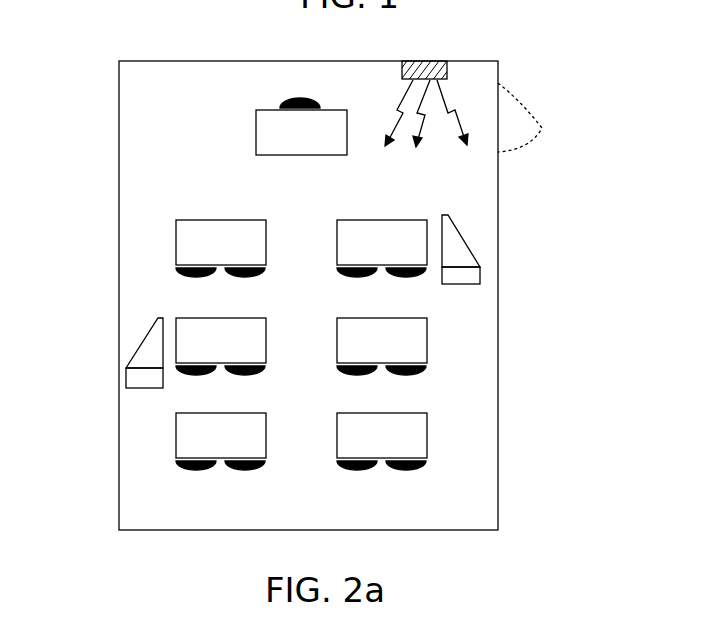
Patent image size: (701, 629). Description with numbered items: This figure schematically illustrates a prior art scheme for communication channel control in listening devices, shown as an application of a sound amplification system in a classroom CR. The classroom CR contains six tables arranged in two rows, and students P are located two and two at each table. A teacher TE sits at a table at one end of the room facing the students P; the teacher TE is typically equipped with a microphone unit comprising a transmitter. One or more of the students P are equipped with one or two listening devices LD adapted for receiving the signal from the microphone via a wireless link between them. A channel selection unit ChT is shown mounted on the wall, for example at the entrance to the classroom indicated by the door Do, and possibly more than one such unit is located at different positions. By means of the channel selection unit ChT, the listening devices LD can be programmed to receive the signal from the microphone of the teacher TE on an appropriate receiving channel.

The teacher TE is at (297, 100).
The channel selection unit ChT is at (428, 78).
The entrance to the classroom Do is at (528, 117).
The classroom CR is at (498, 190).
The listening device LD is at (470, 250).
The students P is at (190, 277).